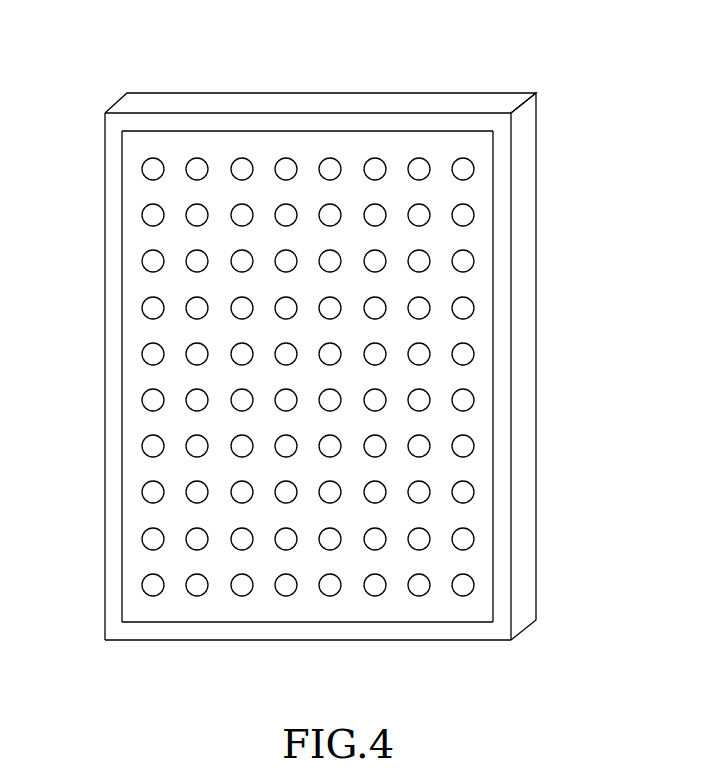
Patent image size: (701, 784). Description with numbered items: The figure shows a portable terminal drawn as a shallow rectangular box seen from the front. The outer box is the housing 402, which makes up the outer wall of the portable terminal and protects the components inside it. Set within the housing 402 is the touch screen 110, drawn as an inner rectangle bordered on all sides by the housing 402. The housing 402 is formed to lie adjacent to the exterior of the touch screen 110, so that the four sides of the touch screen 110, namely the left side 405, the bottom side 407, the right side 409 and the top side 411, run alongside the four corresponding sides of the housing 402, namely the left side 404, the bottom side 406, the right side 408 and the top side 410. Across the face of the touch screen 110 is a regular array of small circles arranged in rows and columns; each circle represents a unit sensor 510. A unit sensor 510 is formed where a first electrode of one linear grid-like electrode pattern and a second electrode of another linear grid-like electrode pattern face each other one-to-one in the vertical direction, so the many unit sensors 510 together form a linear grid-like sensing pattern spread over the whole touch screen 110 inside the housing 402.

The housing 402 is at (170, 102).
The side of the housing 410 is at (262, 122).
The side of the touch screen 411 is at (352, 133).
The touch screen 110 is at (250, 316).
The unit sensor 510 is at (190, 167).
The side of the housing 404 is at (110, 324).
The side of the touch screen 405 is at (120, 365).
The side of the housing 406 is at (285, 633).
The side of the touch screen 407 is at (365, 622).
The side of the housing 408 is at (505, 400).
The side of the touch screen 409 is at (492, 352).